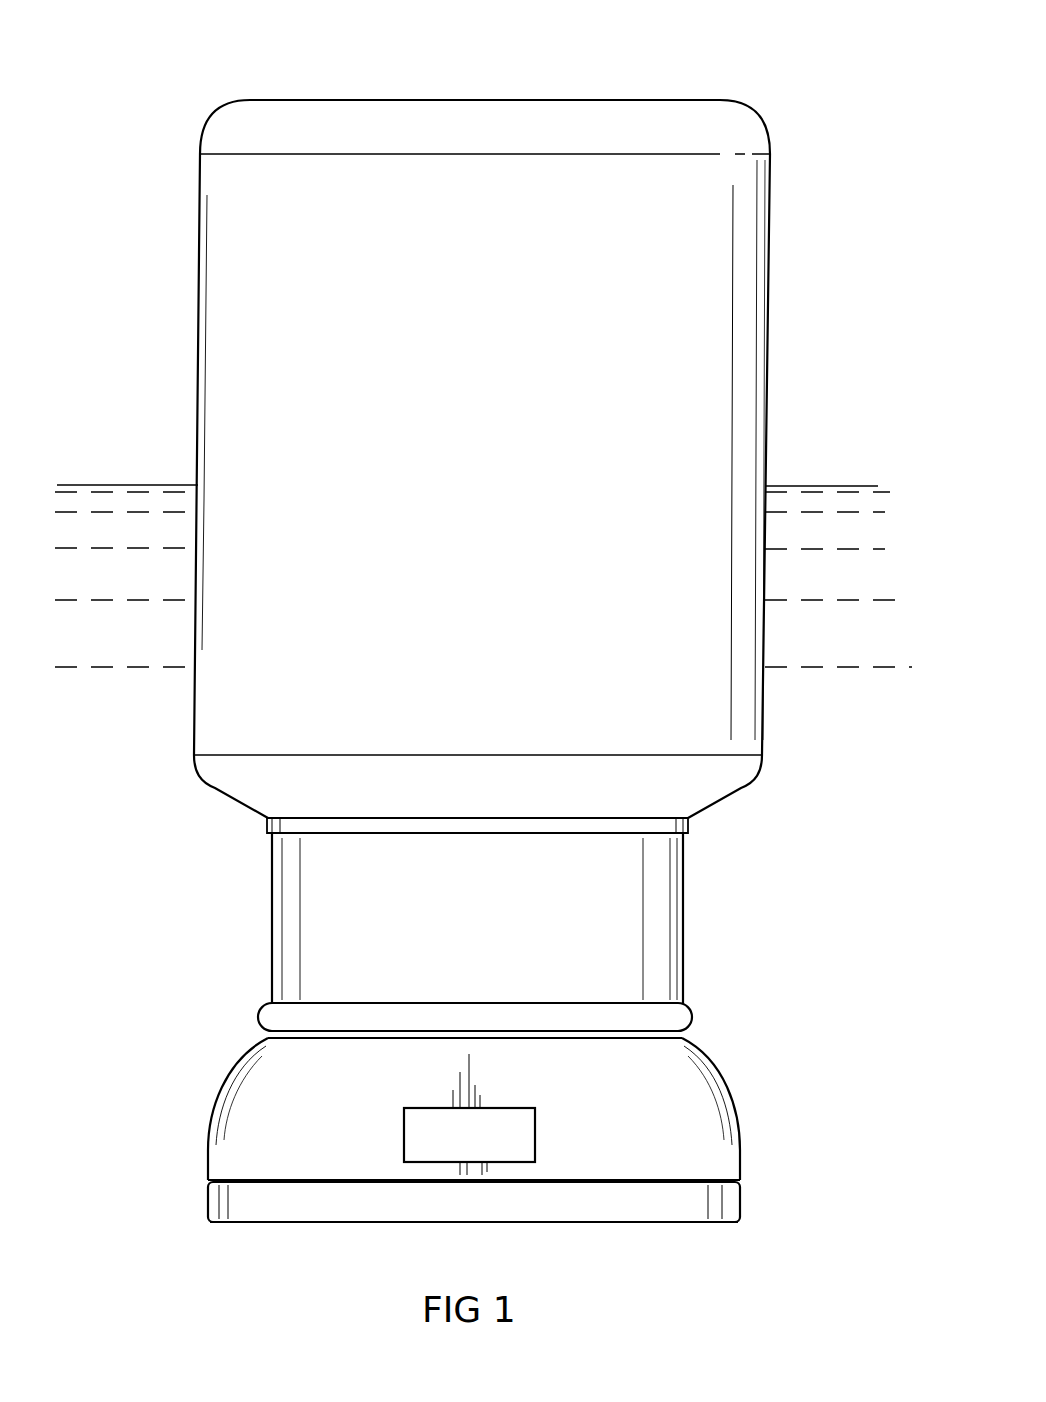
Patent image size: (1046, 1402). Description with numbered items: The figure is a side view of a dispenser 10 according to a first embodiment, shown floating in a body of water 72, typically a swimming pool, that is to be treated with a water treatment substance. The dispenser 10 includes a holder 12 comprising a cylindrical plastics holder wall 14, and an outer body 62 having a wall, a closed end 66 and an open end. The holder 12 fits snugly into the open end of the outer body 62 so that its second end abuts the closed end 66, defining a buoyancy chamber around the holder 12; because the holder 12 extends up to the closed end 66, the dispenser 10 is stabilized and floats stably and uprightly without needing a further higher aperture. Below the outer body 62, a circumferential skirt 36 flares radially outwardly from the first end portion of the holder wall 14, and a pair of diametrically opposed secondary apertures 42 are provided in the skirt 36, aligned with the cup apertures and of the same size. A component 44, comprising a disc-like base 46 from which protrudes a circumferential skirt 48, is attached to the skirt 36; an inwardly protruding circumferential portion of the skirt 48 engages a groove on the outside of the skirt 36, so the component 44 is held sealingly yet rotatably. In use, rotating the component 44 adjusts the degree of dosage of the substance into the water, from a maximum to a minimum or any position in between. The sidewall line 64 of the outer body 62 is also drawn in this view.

The dispenser 10 is at (810, 60).
The holder 12 is at (250, 920).
The holder wall 14 is at (657, 913).
The circumferential skirt 36 is at (705, 1115).
The secondary apertures 42 is at (472, 1175).
The component 44 is at (306, 1238).
The disc-like base 46 is at (592, 1222).
The circumferential skirt 48 is at (720, 1205).
The outer body 62 is at (800, 250).
The container sidewall 64 is at (752, 344).
The closed end 66 is at (515, 100).
The body of water 72 is at (833, 500).